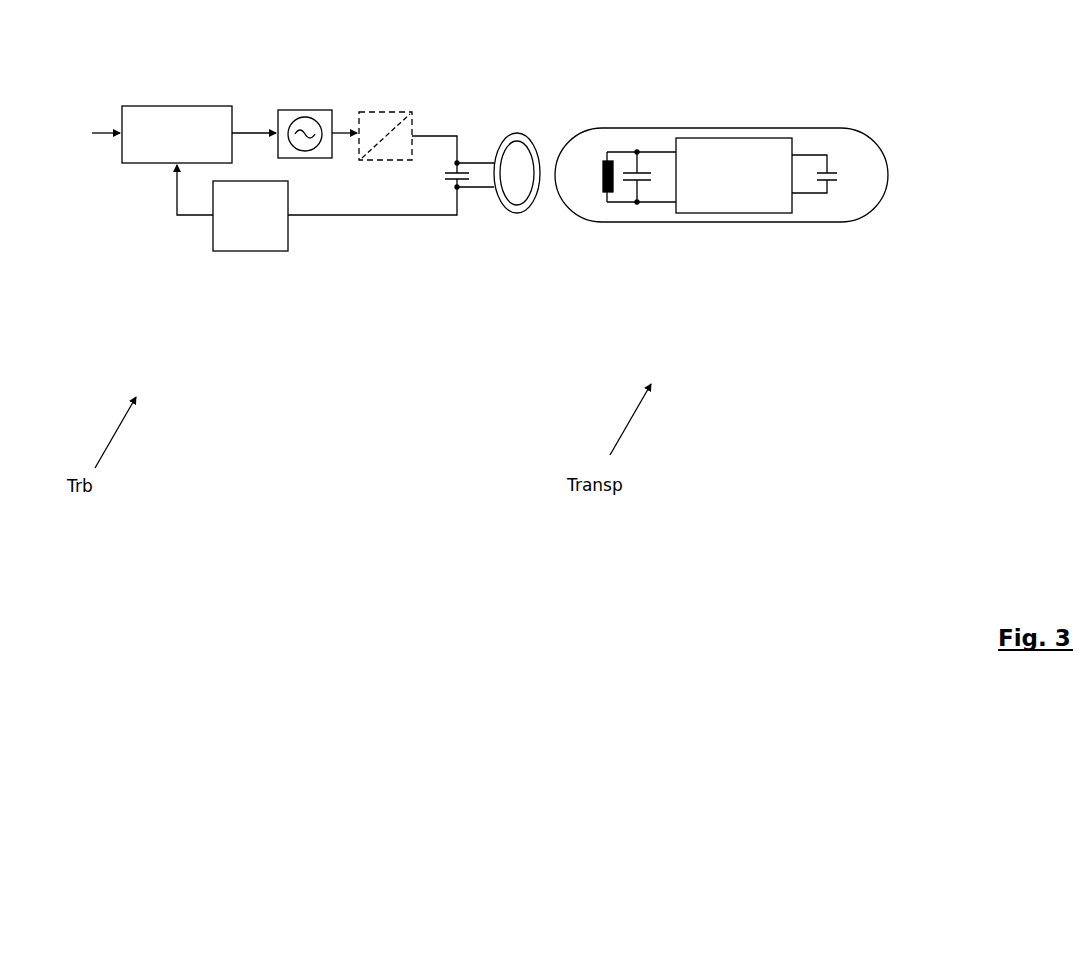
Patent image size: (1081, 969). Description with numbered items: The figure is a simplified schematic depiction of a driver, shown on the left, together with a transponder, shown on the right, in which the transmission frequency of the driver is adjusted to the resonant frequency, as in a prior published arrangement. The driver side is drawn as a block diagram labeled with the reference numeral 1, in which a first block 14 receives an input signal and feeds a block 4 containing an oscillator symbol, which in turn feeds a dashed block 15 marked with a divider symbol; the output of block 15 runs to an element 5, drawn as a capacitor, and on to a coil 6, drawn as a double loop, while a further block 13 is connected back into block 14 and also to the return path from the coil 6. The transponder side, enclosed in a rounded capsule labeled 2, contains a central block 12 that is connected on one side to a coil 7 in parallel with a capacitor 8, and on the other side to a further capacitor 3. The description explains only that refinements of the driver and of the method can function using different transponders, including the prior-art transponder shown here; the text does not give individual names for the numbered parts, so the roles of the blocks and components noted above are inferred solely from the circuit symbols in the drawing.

The transceiver / reading device 1 is at (345, 80).
The transponder 2 is at (691, 128).
The transponder capacitor 3 is at (838, 174).
The oscillator 4 is at (303, 110).
The capacitor 5 is at (445, 174).
The antenna coil 6 is at (515, 133).
The transponder coil 7 is at (602, 176).
The transponder resonant capacitor 8 is at (646, 175).
The transponder circuit 12 is at (777, 138).
The control unit 13 is at (248, 251).
The transmitter unit 14 is at (186, 106).
The frequency divider 15 is at (396, 112).